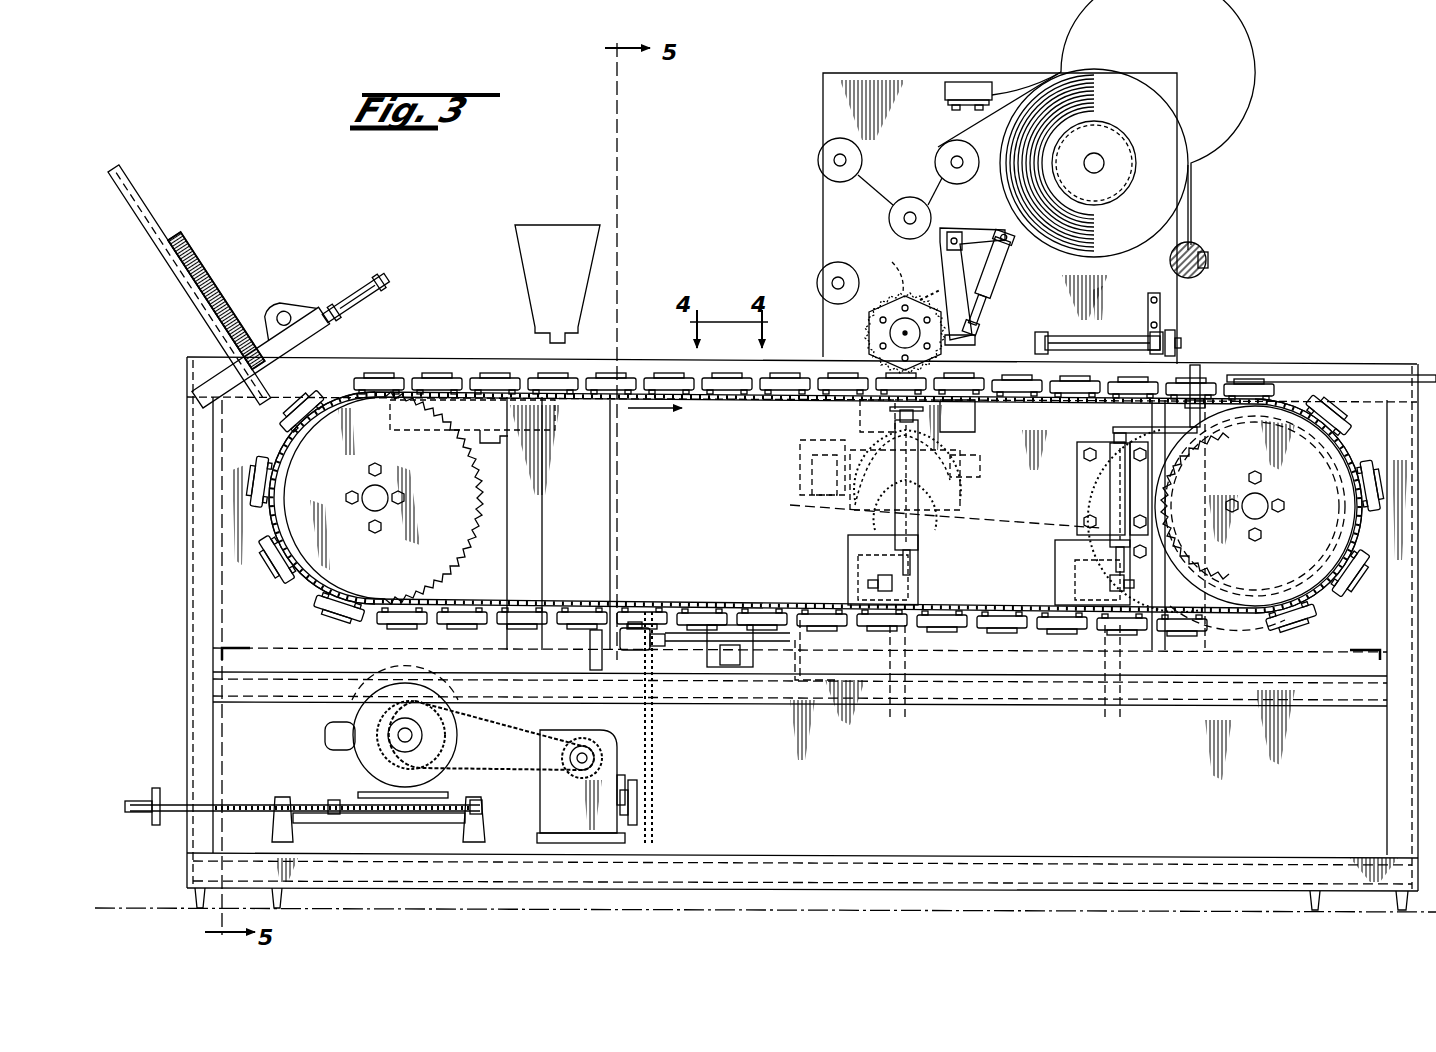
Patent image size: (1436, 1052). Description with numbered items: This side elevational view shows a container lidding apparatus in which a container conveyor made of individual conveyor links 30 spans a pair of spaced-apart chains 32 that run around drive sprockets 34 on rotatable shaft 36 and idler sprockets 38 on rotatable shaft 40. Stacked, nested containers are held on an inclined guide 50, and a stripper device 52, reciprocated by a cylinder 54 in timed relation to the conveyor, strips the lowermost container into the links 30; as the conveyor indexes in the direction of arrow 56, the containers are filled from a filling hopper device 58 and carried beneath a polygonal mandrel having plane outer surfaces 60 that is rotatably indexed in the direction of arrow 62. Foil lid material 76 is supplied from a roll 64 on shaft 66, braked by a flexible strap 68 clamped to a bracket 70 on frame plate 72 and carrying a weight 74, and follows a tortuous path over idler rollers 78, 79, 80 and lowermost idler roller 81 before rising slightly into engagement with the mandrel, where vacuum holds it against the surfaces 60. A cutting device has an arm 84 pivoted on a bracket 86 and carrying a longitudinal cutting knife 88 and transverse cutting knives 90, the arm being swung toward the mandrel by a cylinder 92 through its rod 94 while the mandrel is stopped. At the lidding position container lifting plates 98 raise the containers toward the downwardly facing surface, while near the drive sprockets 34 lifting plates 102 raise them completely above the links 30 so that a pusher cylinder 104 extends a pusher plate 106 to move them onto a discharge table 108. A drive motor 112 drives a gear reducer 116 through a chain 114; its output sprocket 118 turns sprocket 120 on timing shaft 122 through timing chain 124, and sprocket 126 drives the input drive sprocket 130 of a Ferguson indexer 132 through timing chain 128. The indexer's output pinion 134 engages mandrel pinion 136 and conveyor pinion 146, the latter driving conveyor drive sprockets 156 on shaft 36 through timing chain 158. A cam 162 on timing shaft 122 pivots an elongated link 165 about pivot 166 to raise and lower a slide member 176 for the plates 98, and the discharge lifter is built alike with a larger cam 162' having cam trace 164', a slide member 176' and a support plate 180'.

The conveyor links 30 is at (722, 385).
The chains 32 is at (468, 602).
The drive sprockets 34 is at (1315, 580).
The rotatable shaft 36 is at (1260, 510).
The idler sprockets 38 is at (308, 568).
The rotatable shaft 40 is at (362, 492).
The inclined guide 50 is at (143, 198).
The stripper device 52 is at (318, 335).
The cylinder 54 is at (362, 312).
The arrow 56 is at (652, 414).
The filling hopper device 58 is at (565, 232).
The plane outer surfaces 60 is at (872, 320).
The arrow 62 is at (895, 305).
The roll 64 is at (1160, 118).
The shaft 66 is at (1100, 170).
The flexible strap 68 is at (1194, 222).
The bracket 70 is at (978, 82).
The frame plate 72 is at (918, 85).
The weight 74 is at (1207, 270).
The foil lid material 76 is at (880, 190).
The idler roller 78 is at (945, 147).
The idler roller 79 is at (910, 205).
The idler roller 80 is at (825, 150).
The lowermost idler roller 81 is at (840, 262).
The arm 84 is at (950, 262).
The bracket 86 is at (975, 237).
The longitudinal cutting knife 88 is at (955, 340).
The transverse cutting knives 90 is at (912, 296).
The cylinder 92 is at (1005, 270).
The rod 94 is at (985, 300).
The container lifting plates 98 is at (940, 400).
The lifting plates 102 is at (1190, 407).
The pusher cylinder 104 is at (1090, 332).
The pusher plate 106 is at (1180, 338).
The discharge table 108 is at (1345, 373).
The drive motor 112 is at (352, 760).
The chain 114 is at (482, 722).
The gear reducer 116 is at (580, 730).
The output sprocket 118 is at (640, 790).
The sprocket 120 is at (642, 620).
The timing shaft 122 is at (742, 625).
The timing chain 124 is at (655, 755).
The sprocket 126 is at (810, 680).
The timing chain 128 is at (790, 505).
The input drive sprocket 130 is at (800, 452).
The Ferguson indexer 132 is at (965, 478).
The output pinion 134 is at (965, 440).
The mandrel pinion 136 is at (878, 261).
The conveyor pinion 146 is at (955, 498).
The conveyor drive sprockets 156 is at (1275, 620).
The timing chain 158 is at (1040, 540).
The cam 162 is at (923, 687).
The cam 162' is at (1084, 687).
The cam trace 164' is at (1065, 588).
The elongated link 165 is at (882, 592).
The pivot 166 is at (930, 580).
The slide member 176 is at (937, 491).
The slide member 176' is at (1078, 486).
The support plate 180' is at (1080, 500).